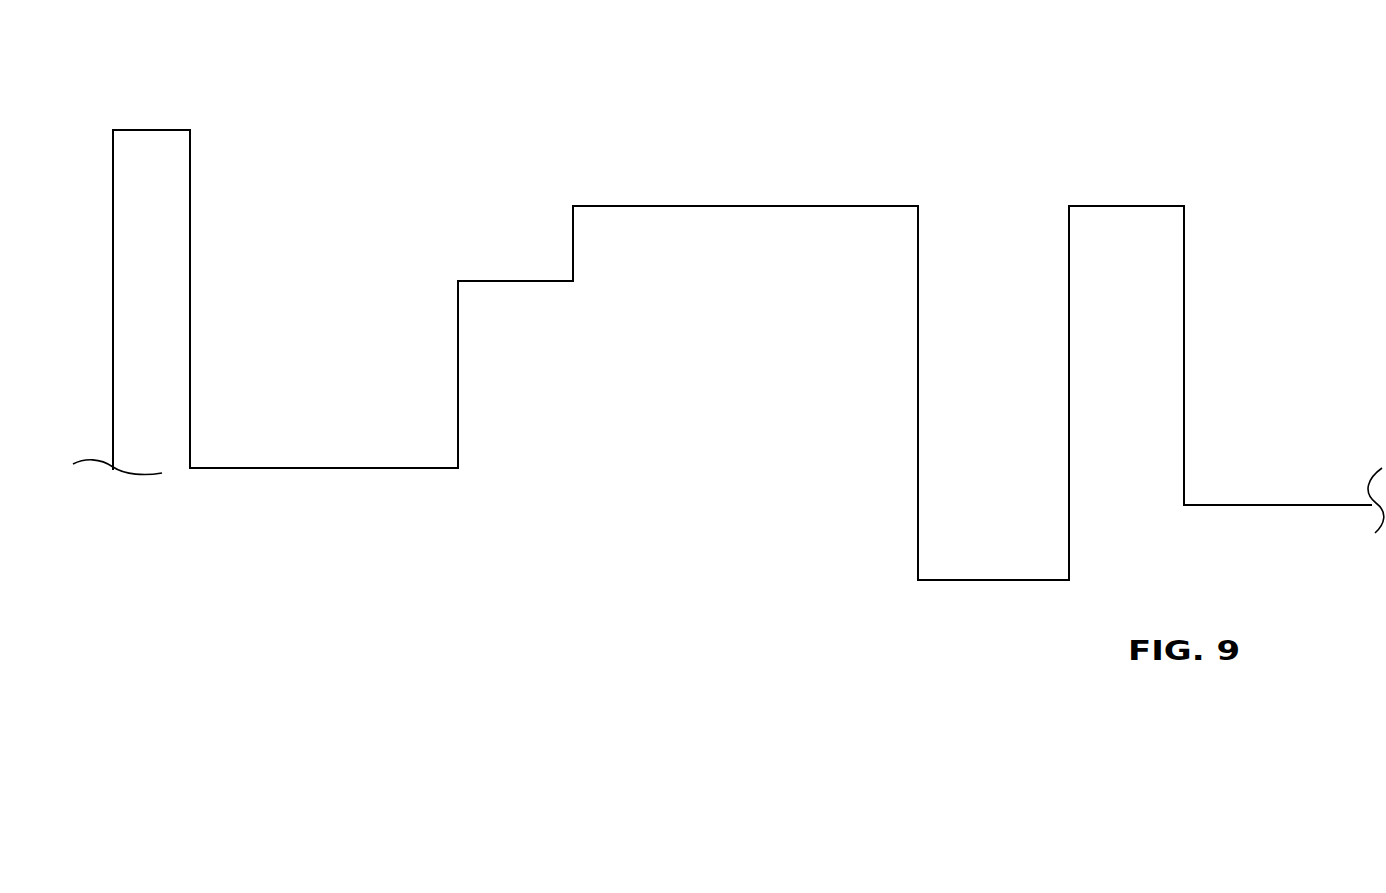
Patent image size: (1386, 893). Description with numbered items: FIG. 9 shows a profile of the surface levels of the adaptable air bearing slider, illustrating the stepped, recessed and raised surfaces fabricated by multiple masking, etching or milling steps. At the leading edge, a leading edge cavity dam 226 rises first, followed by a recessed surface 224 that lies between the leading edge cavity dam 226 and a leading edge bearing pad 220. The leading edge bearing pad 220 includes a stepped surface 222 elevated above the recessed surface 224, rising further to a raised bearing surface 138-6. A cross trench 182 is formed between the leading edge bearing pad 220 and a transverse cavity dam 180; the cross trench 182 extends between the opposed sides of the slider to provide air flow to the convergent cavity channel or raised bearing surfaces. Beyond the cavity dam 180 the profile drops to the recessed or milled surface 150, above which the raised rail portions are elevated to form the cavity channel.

The leading edge cavity dam 226 is at (140, 130).
The recessed surface 224 is at (298, 468).
The stepped surface 222 is at (487, 281).
The leading edge bearing pad 220 is at (625, 206).
The raised bearing surface 138-6 is at (723, 206).
The cross trench 182 is at (997, 280).
The cavity dam 180 is at (1112, 206).
The recessed surface 150 is at (1252, 505).